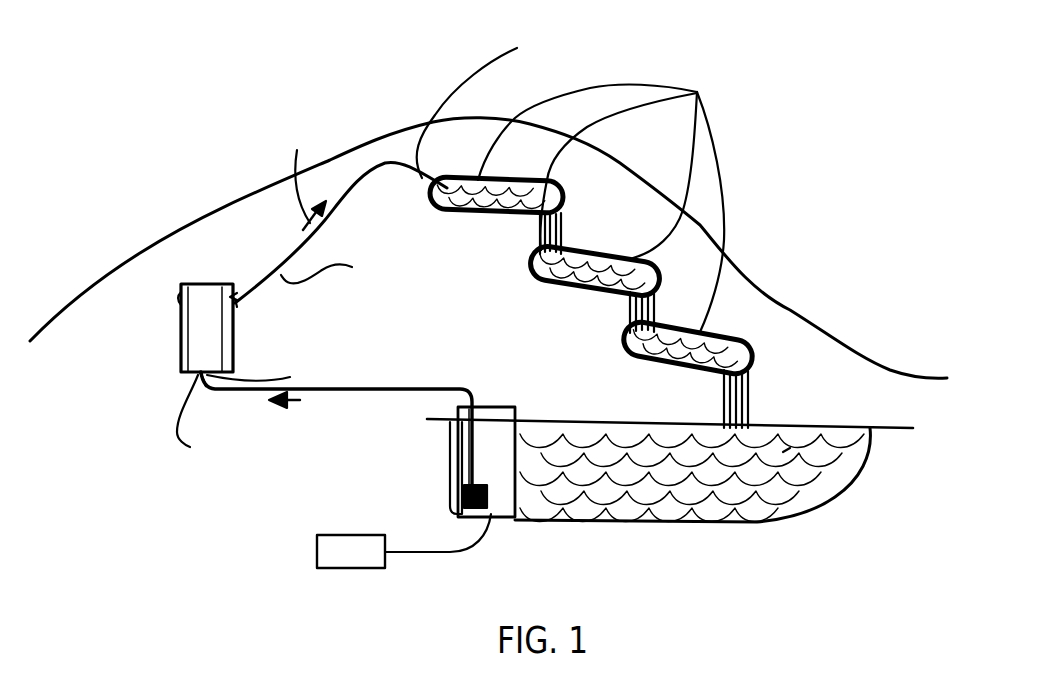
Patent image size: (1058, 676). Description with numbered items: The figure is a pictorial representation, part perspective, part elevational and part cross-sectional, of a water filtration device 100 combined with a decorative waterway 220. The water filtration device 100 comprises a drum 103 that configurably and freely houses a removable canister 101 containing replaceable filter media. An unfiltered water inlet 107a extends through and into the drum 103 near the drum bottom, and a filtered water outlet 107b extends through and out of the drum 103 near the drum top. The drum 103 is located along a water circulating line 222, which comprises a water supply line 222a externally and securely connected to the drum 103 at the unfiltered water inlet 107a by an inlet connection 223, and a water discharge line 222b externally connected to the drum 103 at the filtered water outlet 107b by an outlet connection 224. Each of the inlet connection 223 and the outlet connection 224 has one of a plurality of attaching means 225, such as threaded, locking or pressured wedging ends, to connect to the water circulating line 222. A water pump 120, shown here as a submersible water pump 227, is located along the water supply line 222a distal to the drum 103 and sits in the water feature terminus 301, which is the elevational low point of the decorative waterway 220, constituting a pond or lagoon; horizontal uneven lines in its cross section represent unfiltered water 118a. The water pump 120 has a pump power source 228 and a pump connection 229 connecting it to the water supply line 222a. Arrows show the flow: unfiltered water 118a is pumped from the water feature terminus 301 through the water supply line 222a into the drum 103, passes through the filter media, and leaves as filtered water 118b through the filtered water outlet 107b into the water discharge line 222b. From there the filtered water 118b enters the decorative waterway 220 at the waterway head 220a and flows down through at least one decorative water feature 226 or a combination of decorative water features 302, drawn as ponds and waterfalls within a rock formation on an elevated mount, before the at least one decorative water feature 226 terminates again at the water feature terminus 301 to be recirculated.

The water filtration device 100 is at (200, 283).
The removable canister 101 is at (215, 354).
The drum 103 is at (180, 292).
The unfiltered water inlet 107a is at (274, 375).
The filtered water outlet 107b is at (233, 302).
The unfiltered water 118a is at (293, 409).
The filtered water 118b is at (305, 176).
The water pump 120 is at (457, 510).
The decorative waterway 220 is at (592, 302).
The waterway head 220a is at (481, 98).
The water circulating line 222 is at (381, 166).
The water supply line 222a is at (364, 388).
The water discharge line 222b is at (342, 270).
The inlet connection 223 is at (203, 379).
The outlet connection 224 is at (237, 307).
The attaching means 225 is at (222, 426).
The decorative water feature 226 is at (631, 161).
The submersible water pump 227 is at (468, 468).
The pump power source 228 is at (404, 541).
The pump connection 229 is at (457, 473).
The water feature terminus 301 is at (784, 452).
The combination of decorative water features 302 is at (678, 212).